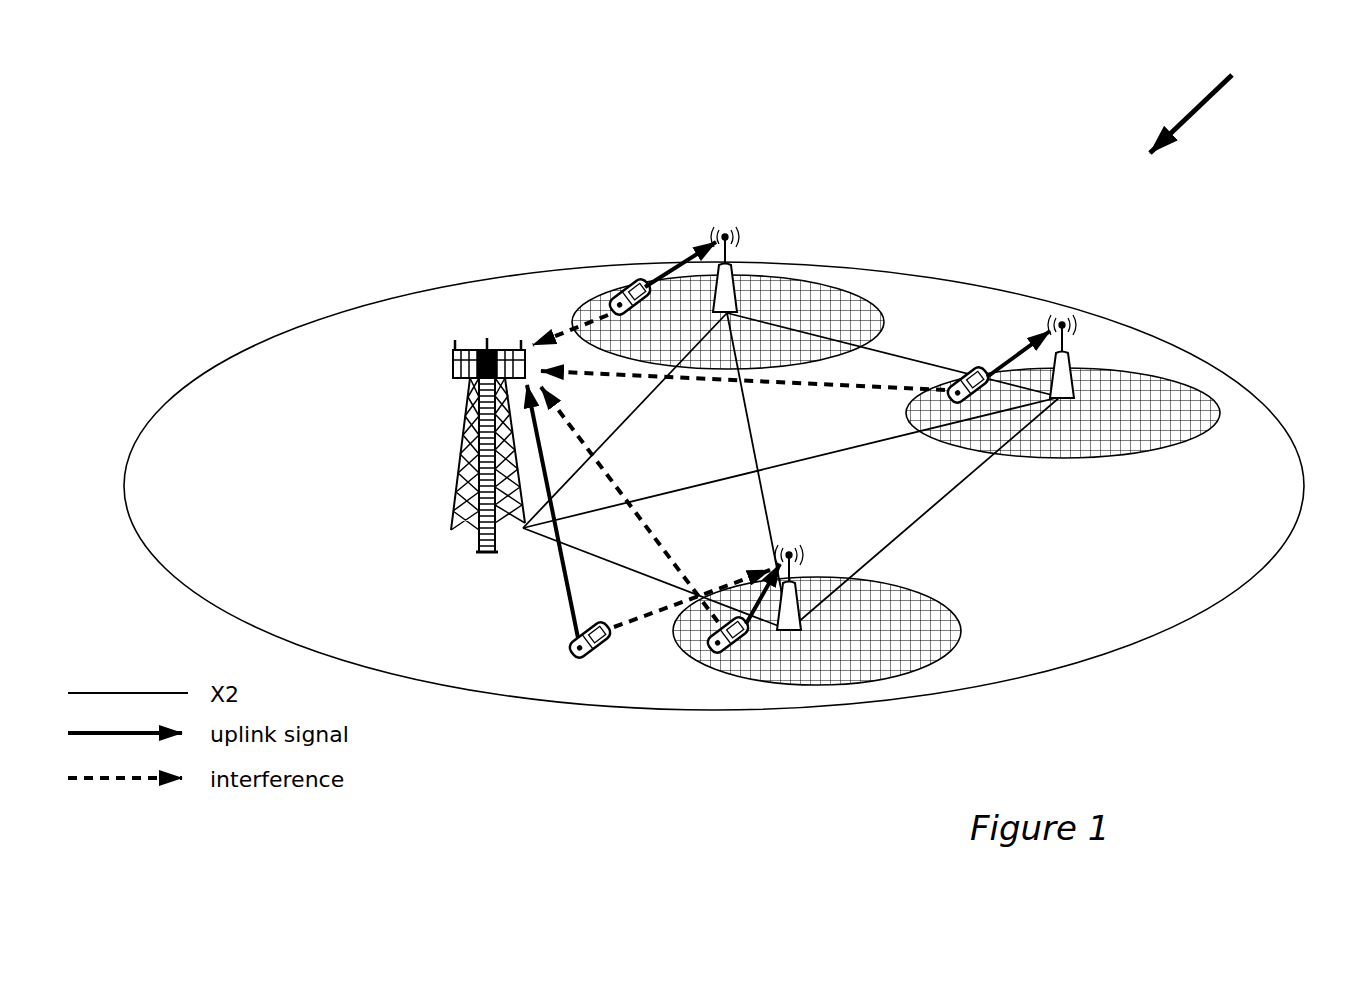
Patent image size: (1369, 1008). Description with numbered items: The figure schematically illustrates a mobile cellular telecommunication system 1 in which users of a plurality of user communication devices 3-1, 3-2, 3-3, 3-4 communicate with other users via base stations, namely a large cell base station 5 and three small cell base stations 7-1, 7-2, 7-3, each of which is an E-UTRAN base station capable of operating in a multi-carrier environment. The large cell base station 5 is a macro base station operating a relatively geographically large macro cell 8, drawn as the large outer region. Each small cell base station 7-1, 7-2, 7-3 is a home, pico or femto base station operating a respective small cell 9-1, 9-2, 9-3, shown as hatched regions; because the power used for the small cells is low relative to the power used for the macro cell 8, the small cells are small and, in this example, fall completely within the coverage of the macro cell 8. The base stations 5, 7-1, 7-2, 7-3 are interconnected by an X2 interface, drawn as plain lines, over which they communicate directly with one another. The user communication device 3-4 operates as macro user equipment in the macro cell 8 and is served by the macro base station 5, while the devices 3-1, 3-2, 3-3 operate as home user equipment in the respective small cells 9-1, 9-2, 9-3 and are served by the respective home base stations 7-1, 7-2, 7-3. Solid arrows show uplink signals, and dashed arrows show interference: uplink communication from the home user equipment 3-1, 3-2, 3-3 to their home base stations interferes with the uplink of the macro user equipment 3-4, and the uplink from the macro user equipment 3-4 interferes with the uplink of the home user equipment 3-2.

The mobile telecommunication system 1 is at (1264, 63).
The user communication device 3-1 is at (972, 370).
The user communication device 3-2 is at (738, 648).
The user communication device 3-3 is at (630, 285).
The user communication device 3-4 is at (575, 662).
The large cell base station 5 is at (487, 352).
The small cell base station 7-1 is at (1072, 387).
The small cell base station 7-2 is at (805, 635).
The small cell base station 7-3 is at (725, 234).
The macro cell 8 is at (227, 358).
The small cell 9-1 is at (1185, 385).
The small cell 9-2 is at (950, 615).
The small cell 9-3 is at (797, 288).